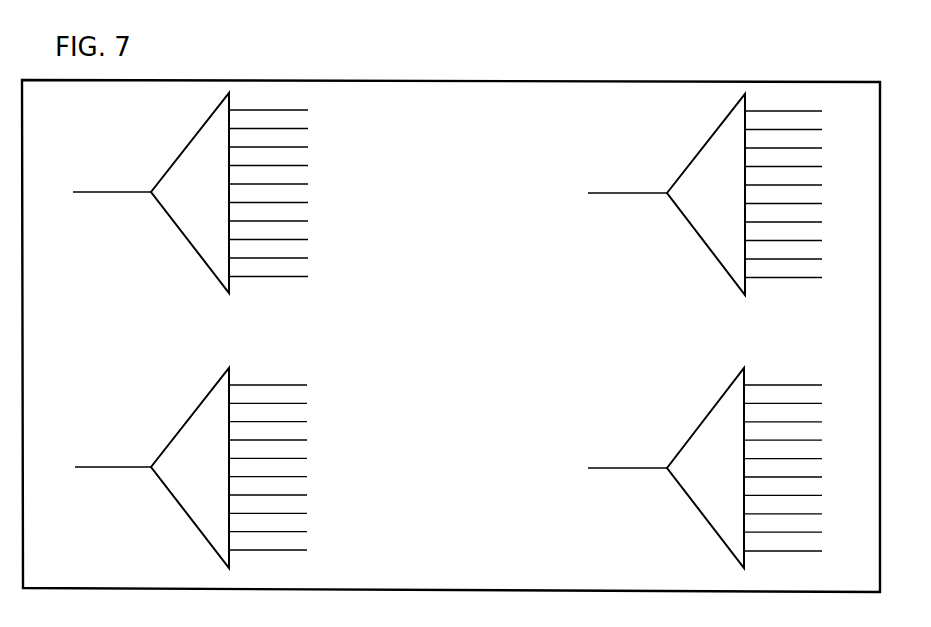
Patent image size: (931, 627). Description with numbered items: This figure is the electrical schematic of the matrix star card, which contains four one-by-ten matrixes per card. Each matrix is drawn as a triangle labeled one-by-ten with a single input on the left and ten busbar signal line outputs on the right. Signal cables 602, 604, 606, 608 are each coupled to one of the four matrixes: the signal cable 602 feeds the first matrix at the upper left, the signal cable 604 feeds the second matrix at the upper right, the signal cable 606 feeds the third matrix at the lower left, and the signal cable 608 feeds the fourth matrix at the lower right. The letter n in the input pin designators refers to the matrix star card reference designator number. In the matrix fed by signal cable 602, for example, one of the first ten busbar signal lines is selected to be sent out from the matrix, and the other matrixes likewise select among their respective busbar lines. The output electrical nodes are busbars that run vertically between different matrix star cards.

The signal cable 602 is at (95, 188).
The signal cable 604 is at (612, 185).
The signal cable 606 is at (85, 455).
The signal cable 608 is at (615, 465).